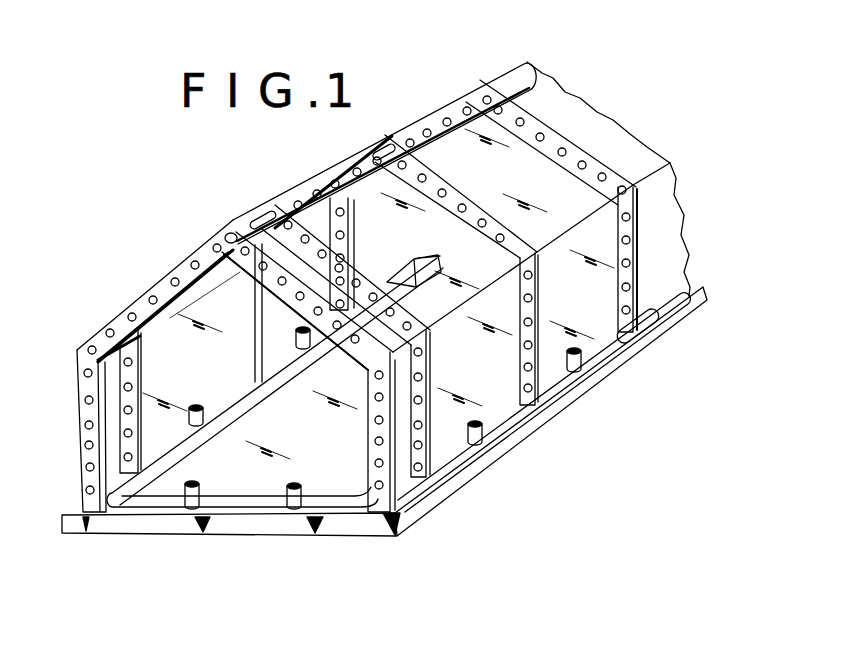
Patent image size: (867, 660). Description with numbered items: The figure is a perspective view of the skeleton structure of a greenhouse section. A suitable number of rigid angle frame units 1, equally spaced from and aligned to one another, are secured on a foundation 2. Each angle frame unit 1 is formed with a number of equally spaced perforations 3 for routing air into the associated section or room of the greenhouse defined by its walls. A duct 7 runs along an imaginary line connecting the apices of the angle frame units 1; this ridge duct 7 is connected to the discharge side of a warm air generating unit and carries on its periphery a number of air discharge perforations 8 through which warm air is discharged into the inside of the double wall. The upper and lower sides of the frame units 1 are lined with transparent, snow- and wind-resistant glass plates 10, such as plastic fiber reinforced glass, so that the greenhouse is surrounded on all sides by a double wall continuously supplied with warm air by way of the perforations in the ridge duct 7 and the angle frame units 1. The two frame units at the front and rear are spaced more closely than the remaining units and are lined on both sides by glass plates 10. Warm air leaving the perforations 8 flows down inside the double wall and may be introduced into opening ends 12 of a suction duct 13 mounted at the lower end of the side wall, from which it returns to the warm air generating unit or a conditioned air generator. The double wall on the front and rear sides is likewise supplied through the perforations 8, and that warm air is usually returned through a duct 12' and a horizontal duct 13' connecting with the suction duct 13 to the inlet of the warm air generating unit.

The angle frame unit 1 is at (553, 130).
The foundation 2 is at (272, 392).
The perforation 3 is at (523, 112).
The duct 7 is at (342, 173).
The air discharge perforation 8 is at (298, 204).
The glass plate 10 is at (613, 133).
The opening end 12 is at (414, 413).
The suction duct 13 is at (453, 386).
The duct 12' is at (216, 531).
The horizontal duct 13' is at (335, 531).